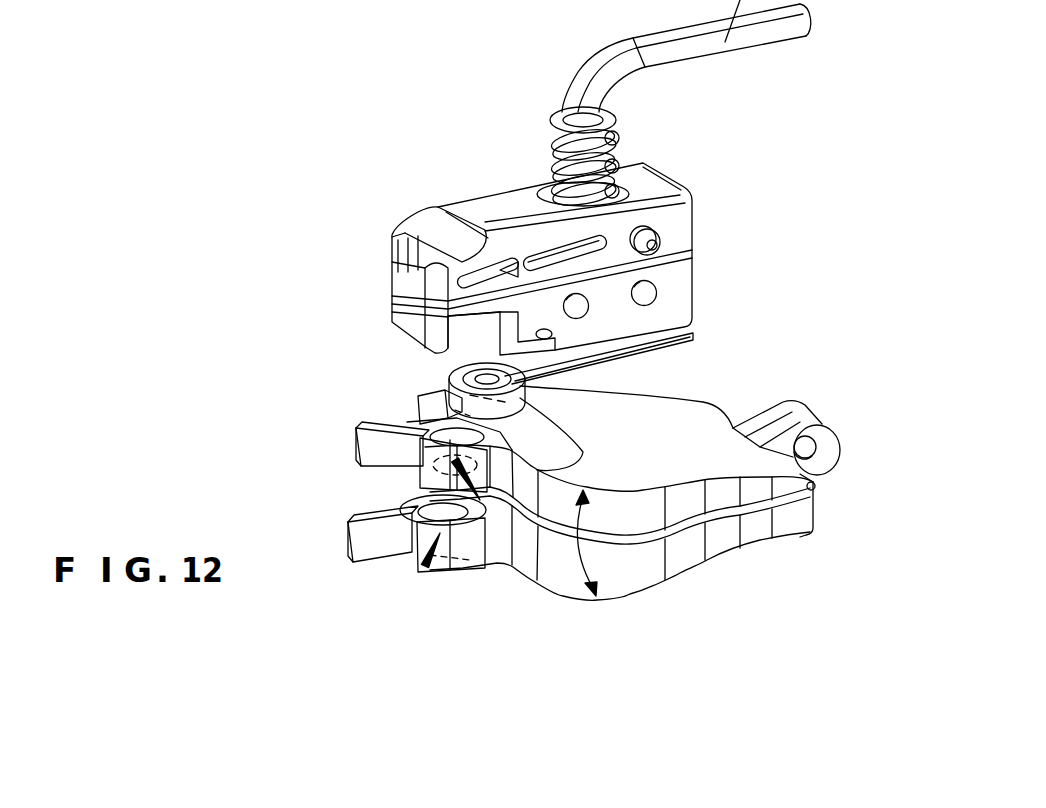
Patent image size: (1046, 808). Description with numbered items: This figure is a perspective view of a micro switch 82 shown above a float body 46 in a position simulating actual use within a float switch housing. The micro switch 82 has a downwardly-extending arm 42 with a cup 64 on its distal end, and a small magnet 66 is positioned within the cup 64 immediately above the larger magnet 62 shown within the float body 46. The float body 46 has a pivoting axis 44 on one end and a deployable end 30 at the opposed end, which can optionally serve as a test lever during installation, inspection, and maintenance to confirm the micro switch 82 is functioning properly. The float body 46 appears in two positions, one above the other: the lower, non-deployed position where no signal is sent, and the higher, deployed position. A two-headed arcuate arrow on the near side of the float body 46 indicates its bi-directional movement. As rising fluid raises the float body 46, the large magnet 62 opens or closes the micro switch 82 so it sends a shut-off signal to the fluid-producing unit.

The micro switch 82 is at (487, 218).
The downwardly-extending arm 42 is at (576, 354).
The small magnet 66 is at (443, 373).
The cup 64 is at (519, 398).
The pivoting axis 44 is at (823, 440).
The float body 46 is at (672, 562).
The deployable end 30 is at (383, 533).
The large magnet 62 is at (482, 575).